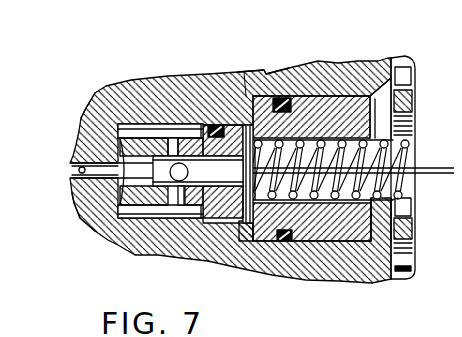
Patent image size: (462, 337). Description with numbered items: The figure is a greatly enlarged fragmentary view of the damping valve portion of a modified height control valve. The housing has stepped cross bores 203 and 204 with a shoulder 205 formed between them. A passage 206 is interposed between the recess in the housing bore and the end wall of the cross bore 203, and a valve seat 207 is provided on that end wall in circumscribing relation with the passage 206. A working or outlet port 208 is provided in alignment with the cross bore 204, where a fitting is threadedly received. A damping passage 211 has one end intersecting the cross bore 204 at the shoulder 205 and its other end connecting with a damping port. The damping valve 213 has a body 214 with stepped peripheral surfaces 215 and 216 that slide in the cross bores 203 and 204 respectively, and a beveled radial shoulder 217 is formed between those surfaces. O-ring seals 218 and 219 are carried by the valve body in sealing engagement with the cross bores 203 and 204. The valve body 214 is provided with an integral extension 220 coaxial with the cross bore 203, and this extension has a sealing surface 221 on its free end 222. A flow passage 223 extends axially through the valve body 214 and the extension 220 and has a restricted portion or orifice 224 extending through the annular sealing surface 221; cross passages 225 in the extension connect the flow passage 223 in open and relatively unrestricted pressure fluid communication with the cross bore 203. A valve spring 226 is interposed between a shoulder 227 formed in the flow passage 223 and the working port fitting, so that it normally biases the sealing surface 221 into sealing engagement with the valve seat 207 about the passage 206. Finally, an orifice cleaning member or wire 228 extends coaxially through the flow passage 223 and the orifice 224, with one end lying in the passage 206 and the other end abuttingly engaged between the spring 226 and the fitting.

The cross bore 203 is at (160, 210).
The cross bore 204 is at (351, 233).
The shoulder 205 is at (244, 234).
The passage 206 is at (72, 158).
The valve seat 207 is at (118, 213).
The working or outlet port 208 is at (404, 68).
The damping passage 211 is at (257, 62).
The damping valve 213 is at (352, 80).
The body 214 is at (330, 119).
The peripheral surface 215 is at (217, 85).
The peripheral surface 216 is at (319, 88).
The beveled radial shoulder 217 is at (242, 90).
The O-ring seal 218 is at (212, 112).
The O-ring seal 219 is at (278, 236).
The integral extension 220 is at (151, 116).
The sealing surface 221 is at (79, 113).
The free end 222 is at (110, 198).
The flow passage 223 is at (254, 151).
The restricted portion or orifice 224 is at (131, 137).
The cross passages 225 is at (176, 190).
The valve spring 226 is at (385, 172).
The shoulder 227 is at (256, 195).
The orifice cleaning member or wire 228 is at (413, 152).